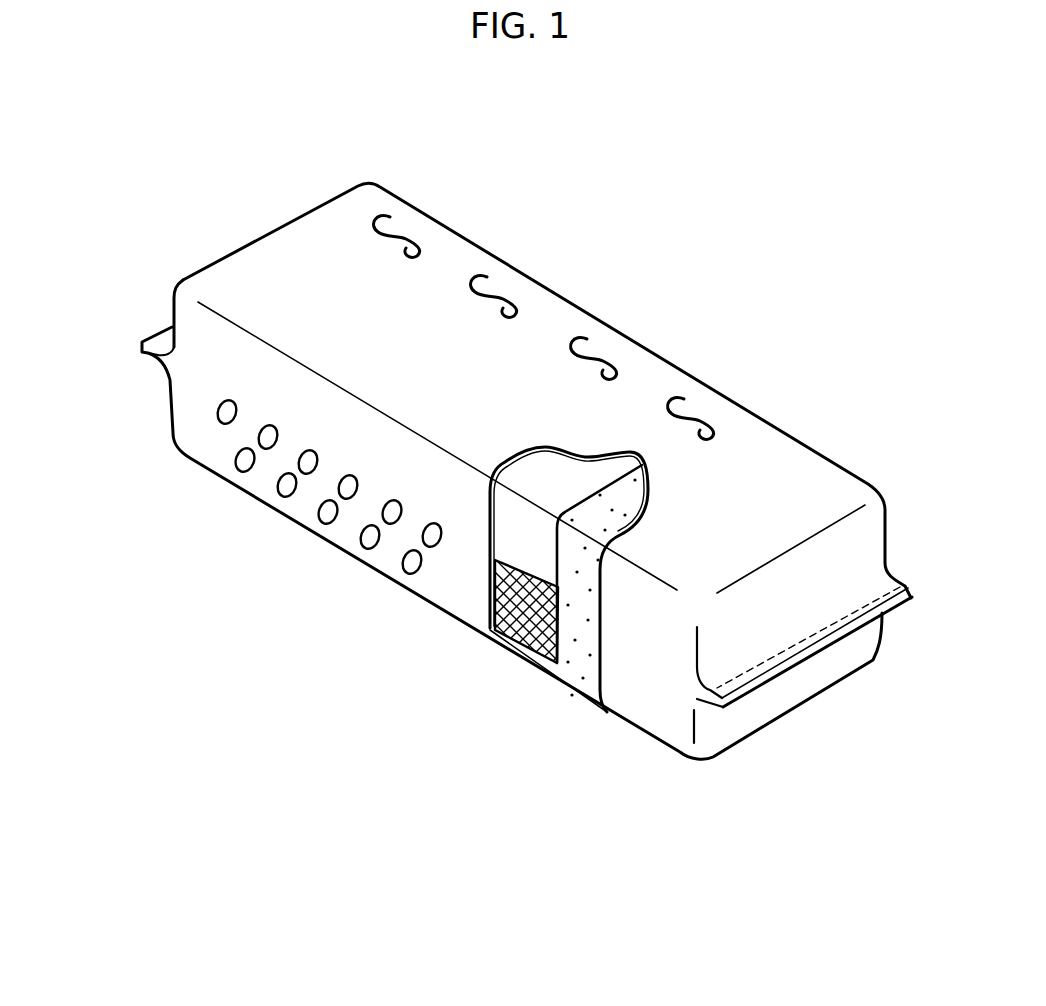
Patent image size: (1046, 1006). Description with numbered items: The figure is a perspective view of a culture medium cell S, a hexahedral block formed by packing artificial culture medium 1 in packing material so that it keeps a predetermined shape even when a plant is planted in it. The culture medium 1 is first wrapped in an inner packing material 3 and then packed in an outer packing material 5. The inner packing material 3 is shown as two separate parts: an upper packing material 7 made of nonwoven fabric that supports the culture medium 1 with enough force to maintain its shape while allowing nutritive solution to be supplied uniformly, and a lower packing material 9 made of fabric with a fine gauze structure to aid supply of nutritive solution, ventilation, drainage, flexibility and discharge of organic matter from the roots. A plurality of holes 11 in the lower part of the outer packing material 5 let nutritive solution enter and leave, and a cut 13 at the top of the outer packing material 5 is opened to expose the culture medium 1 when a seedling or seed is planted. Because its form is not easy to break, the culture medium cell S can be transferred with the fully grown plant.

The culture medium 1 is at (583, 647).
The inner packing material 3 is at (518, 570).
The outer packing material 5 is at (323, 540).
The upper packing material 7 is at (518, 535).
The lower packing material 9 is at (512, 630).
The holes 11 is at (243, 465).
The cut 13 is at (505, 292).
The culture medium cell S is at (667, 348).